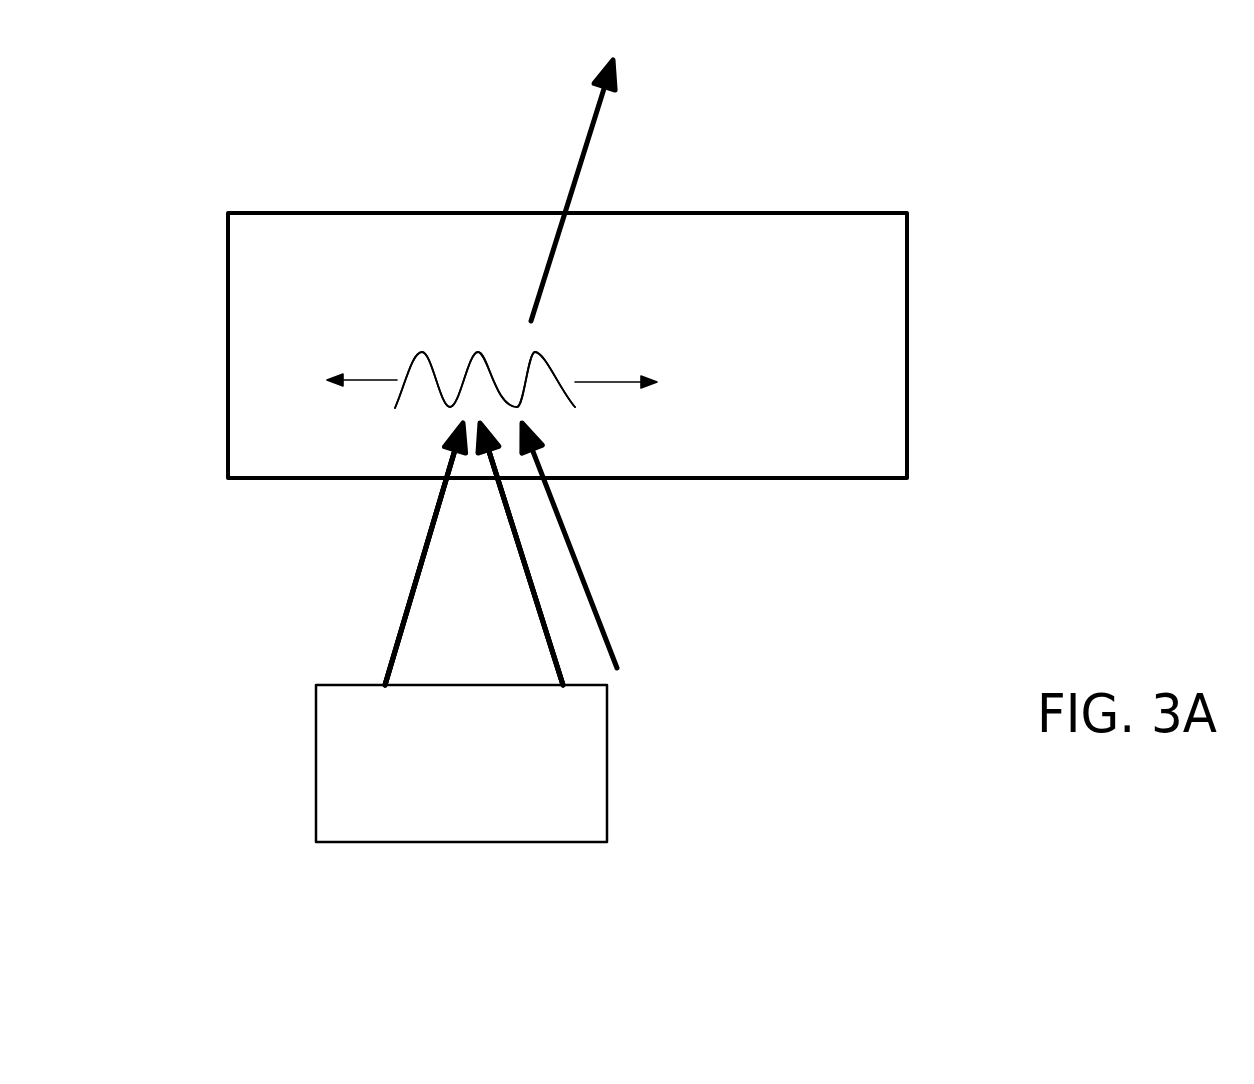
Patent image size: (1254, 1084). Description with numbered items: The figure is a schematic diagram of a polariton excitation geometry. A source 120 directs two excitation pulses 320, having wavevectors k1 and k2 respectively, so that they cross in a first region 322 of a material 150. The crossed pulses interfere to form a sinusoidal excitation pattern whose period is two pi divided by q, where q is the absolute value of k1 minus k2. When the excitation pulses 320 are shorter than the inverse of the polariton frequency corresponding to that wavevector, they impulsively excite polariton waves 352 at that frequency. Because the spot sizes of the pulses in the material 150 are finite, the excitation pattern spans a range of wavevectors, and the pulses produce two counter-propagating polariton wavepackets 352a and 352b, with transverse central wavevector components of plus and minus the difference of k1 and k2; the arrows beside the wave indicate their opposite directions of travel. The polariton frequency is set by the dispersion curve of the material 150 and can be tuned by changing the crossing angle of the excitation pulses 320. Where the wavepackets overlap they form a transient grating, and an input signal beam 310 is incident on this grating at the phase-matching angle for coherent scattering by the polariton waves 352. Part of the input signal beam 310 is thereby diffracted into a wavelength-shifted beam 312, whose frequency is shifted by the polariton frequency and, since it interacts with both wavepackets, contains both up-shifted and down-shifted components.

The source 120 is at (316, 777).
The material 150 is at (798, 289).
The input signal beam 310 is at (567, 548).
The wavelength-shifted beam 312 is at (602, 114).
The excitation pulses 320 is at (466, 506).
The first region 322 is at (493, 346).
The polariton waves 352 is at (435, 410).
The counter-propagating polariton wavepacket 352a is at (603, 380).
The counter-propagating polariton wavepacket 352b is at (377, 380).
The wavevector k1 is at (405, 602).
The wavevector k2 is at (530, 602).